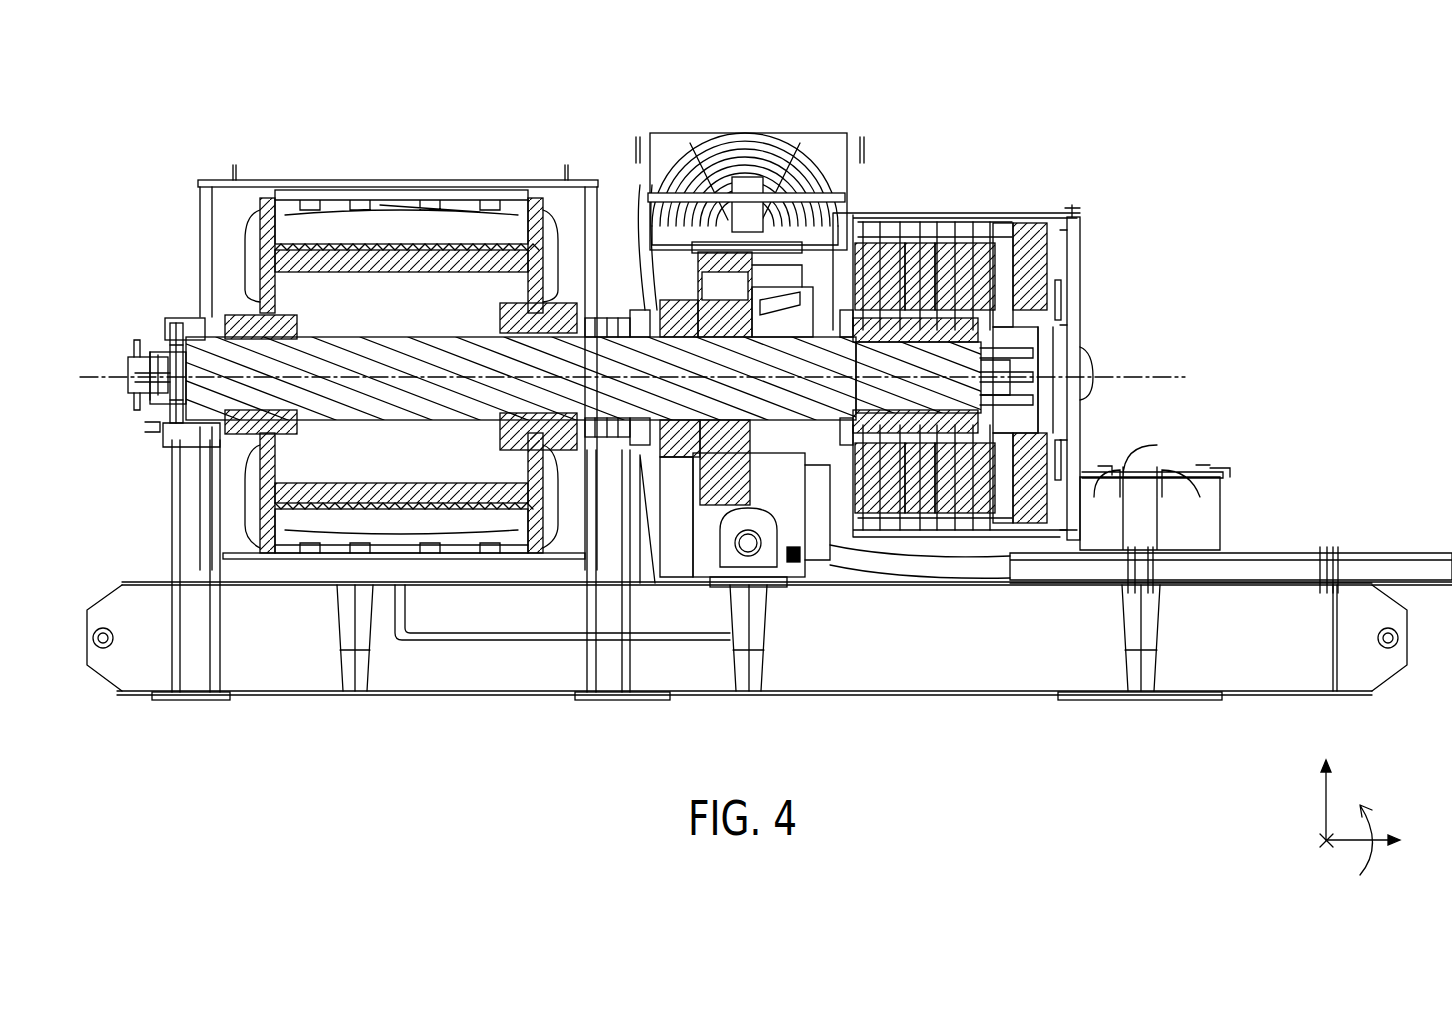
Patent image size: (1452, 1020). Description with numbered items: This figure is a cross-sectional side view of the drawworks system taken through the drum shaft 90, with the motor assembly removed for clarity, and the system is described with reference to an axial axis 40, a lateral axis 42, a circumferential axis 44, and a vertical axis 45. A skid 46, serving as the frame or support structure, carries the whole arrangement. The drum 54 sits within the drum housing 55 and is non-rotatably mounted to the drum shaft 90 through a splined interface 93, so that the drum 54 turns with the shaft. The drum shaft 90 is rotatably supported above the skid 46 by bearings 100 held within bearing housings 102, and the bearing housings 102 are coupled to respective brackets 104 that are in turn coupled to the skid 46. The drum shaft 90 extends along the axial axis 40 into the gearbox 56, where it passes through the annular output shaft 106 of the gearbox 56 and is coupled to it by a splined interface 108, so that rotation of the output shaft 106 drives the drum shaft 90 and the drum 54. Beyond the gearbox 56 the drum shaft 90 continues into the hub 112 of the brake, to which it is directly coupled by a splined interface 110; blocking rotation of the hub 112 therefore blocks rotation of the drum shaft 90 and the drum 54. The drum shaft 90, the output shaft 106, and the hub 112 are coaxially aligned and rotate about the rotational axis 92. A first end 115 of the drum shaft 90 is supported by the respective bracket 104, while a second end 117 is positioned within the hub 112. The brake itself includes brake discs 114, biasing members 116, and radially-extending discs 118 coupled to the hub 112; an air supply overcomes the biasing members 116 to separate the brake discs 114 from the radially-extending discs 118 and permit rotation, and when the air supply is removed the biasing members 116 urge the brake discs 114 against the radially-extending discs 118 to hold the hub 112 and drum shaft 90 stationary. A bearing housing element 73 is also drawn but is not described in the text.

The axial axis 40 is at (1348, 840).
The lateral axis 42 is at (1320, 845).
The circumferential axis 44 is at (1372, 860).
The vertical axis 45 is at (1320, 800).
The skid 46 is at (285, 700).
The drum 54 is at (402, 250).
The drum housing 55 is at (225, 180).
The gearbox 56 is at (780, 193).
The bearing housing 73 is at (240, 320).
The drum shaft 90 is at (388, 350).
The rotational axis 92 is at (1140, 380).
The splined interface 93 is at (565, 303).
The bearings 100 is at (175, 336).
The bearing housings 102 is at (180, 320).
The brackets 104 is at (205, 622).
The output shaft 106 is at (722, 300).
The splined interface 108 is at (728, 480).
The splined interface 110 is at (950, 325).
The hub 112 is at (960, 340).
The brake discs 114 is at (930, 305).
The first end 115 is at (124, 436).
The biasing members 116 is at (882, 300).
The second end 117 is at (1102, 318).
The radially-extending discs 118 is at (905, 300).